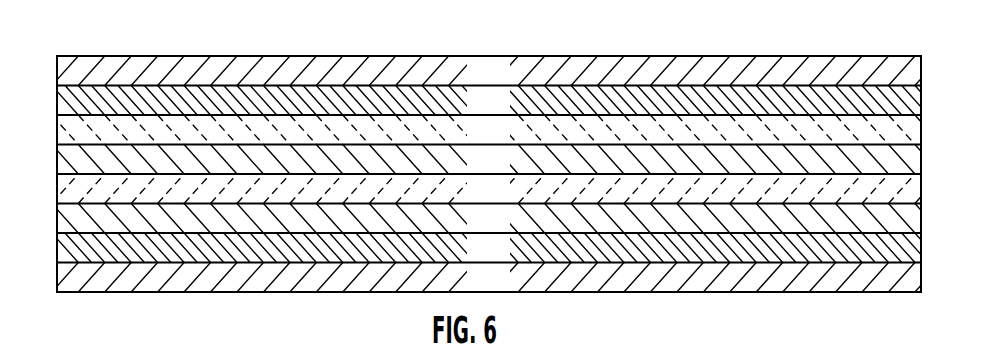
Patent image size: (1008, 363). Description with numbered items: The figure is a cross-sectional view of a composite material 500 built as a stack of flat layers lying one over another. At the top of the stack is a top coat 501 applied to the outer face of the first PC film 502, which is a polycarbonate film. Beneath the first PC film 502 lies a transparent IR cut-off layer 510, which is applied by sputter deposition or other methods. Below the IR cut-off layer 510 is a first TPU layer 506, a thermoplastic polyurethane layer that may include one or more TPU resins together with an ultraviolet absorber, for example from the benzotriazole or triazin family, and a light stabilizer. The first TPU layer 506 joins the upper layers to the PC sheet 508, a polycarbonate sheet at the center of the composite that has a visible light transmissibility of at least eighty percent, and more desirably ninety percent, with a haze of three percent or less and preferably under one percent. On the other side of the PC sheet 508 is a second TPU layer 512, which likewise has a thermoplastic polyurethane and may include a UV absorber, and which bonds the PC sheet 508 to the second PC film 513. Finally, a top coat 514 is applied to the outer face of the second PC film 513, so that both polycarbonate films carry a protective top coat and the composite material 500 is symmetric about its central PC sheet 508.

The composite material 500 is at (41, 170).
The top coat 501 is at (506, 84).
The first PC film 502 is at (506, 113).
The transparent IR cut-off layer 510 is at (506, 142).
The first TPU layer 506 is at (506, 172).
The PC sheet 508 is at (506, 202).
The second TPU layer 512 is at (506, 231).
The second PC film 513 is at (506, 260).
The top coat 514 is at (506, 290).